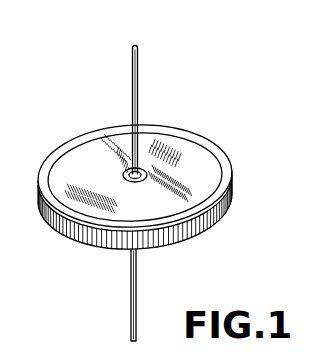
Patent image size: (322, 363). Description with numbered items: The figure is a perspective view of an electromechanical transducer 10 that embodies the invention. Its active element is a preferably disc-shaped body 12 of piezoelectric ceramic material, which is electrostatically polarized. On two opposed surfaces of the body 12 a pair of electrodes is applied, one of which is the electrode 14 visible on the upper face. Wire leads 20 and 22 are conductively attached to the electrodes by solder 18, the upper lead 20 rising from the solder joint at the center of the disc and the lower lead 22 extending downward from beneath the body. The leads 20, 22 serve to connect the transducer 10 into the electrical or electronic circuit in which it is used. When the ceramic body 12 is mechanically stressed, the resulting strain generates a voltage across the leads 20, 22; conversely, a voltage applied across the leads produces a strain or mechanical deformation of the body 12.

The electromechanical transducer 10 is at (155, 194).
The disc-shaped body 12 is at (206, 137).
The electrode 14 is at (200, 173).
The solder 18 is at (142, 170).
The wire lead 20 is at (137, 92).
The wire lead 22 is at (129, 263).